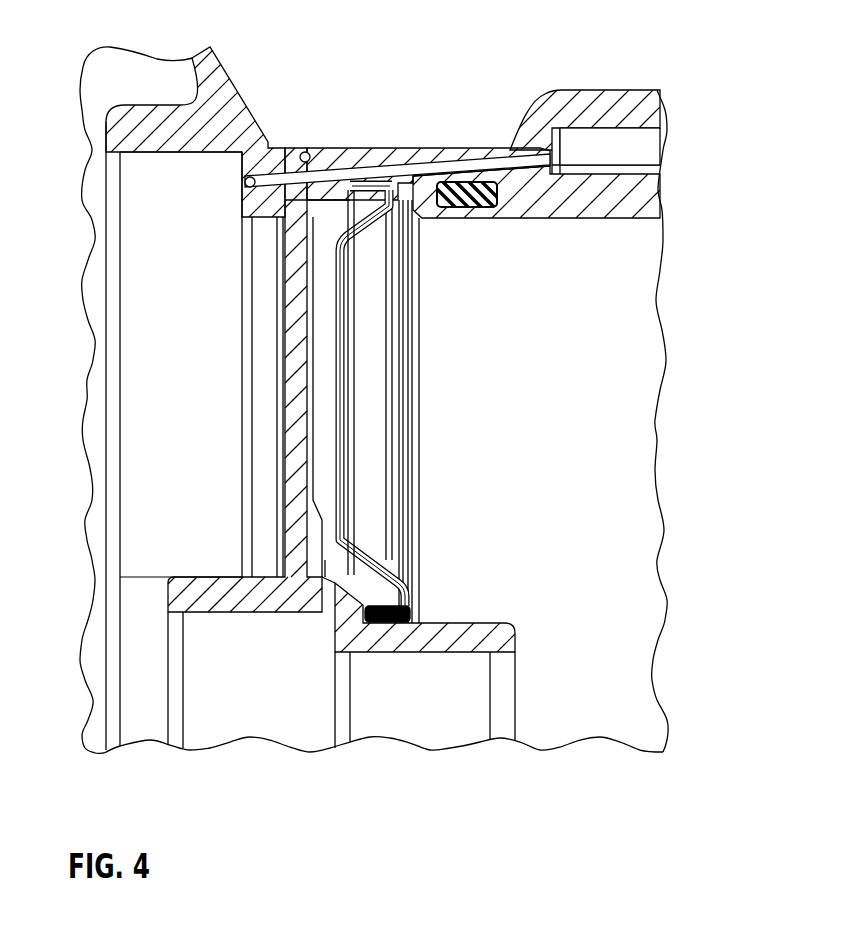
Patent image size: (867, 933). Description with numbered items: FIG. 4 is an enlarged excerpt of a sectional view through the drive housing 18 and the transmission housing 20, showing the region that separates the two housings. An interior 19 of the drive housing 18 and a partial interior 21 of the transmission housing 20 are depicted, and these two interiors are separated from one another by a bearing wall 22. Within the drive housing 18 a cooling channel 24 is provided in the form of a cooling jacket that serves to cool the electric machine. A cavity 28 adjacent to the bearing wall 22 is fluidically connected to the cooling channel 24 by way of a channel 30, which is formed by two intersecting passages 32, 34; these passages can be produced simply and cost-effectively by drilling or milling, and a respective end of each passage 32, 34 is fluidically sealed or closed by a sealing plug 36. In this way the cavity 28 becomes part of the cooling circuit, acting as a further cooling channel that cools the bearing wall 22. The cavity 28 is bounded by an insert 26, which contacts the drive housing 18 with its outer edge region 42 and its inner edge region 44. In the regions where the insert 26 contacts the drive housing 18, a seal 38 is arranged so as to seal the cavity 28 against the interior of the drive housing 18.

The drive housing 18 is at (560, 82).
The interior 19 is at (588, 388).
The transmission housing 20 is at (75, 248).
The partial interior 21 is at (150, 352).
The bearing wall 22 is at (295, 455).
The cooling channel 24 is at (605, 150).
The insert 26 is at (370, 457).
The cavity 28 is at (325, 545).
The channel 30 is at (420, 150).
The passage 32 is at (462, 175).
The passage 34 is at (325, 185).
The sealing plug 36 is at (253, 177).
The seal 38 is at (400, 640).
The outer edge region 42 is at (377, 178).
The inner edge region 44 is at (375, 626).